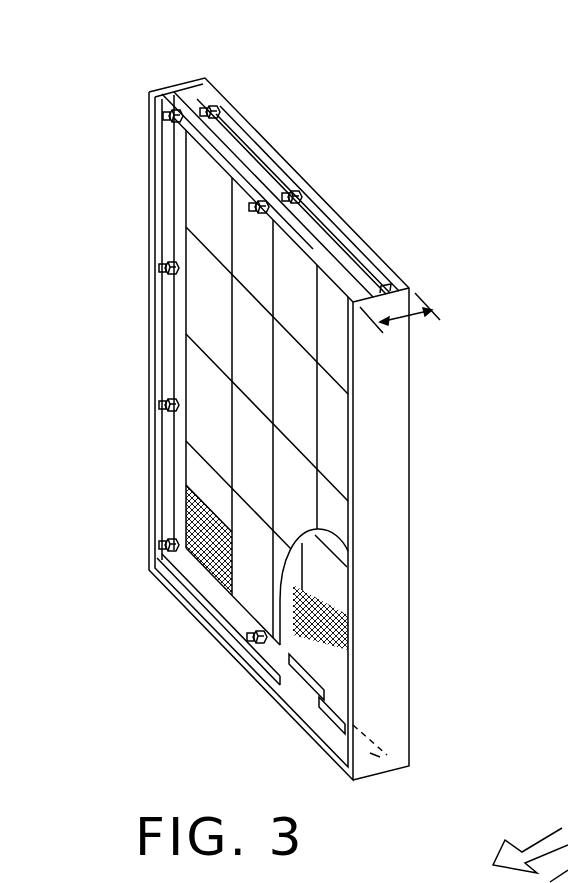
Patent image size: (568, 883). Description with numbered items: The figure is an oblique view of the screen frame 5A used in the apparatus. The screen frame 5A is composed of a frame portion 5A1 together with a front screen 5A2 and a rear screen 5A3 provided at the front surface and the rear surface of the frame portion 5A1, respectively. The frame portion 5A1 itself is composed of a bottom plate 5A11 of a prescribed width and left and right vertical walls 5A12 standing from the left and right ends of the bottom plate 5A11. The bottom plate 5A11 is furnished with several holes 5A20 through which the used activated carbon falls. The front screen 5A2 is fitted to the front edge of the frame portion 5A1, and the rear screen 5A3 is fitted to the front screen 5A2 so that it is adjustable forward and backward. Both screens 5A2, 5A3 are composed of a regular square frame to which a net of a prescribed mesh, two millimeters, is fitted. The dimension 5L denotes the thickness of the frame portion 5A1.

The screen frame 5A is at (332, 193).
The frame portion 5A1 is at (387, 553).
The vertical walls 5A12 is at (190, 80).
The front screen 5A2 is at (280, 170).
The rear screen 5A3 is at (193, 163).
The thickness of the frame portion 5L is at (407, 330).
The bottom plate 5A11 is at (305, 714).
The holes 5A20 is at (320, 684).